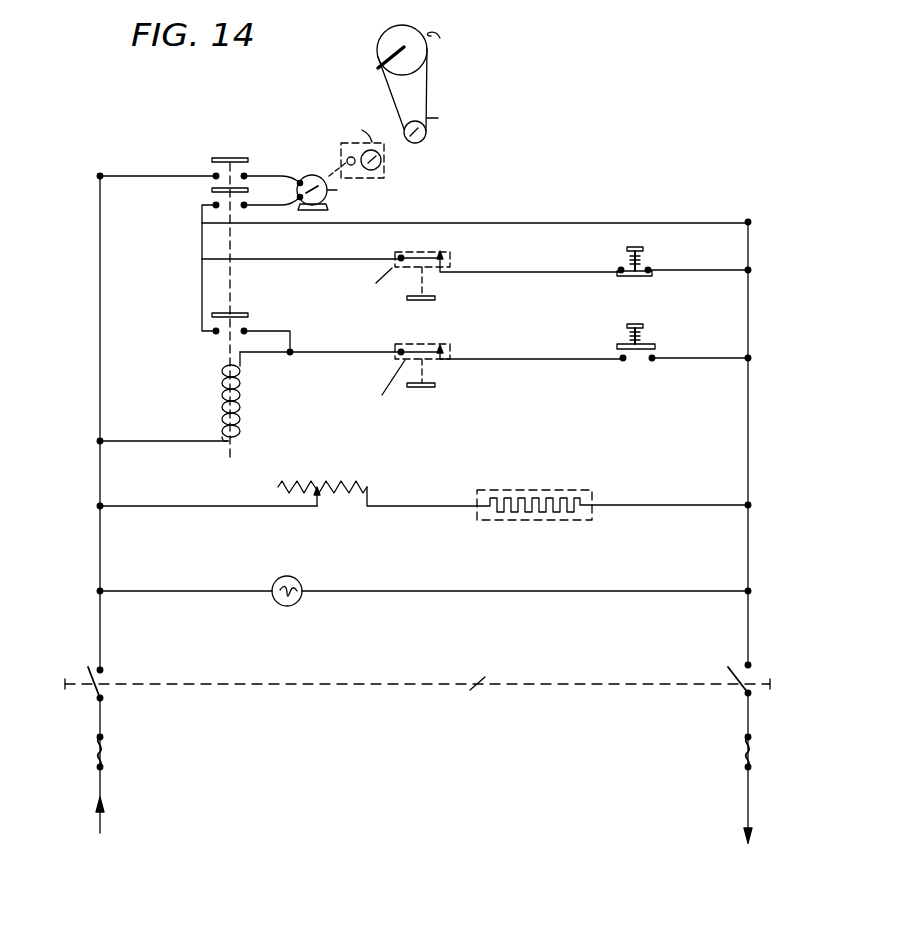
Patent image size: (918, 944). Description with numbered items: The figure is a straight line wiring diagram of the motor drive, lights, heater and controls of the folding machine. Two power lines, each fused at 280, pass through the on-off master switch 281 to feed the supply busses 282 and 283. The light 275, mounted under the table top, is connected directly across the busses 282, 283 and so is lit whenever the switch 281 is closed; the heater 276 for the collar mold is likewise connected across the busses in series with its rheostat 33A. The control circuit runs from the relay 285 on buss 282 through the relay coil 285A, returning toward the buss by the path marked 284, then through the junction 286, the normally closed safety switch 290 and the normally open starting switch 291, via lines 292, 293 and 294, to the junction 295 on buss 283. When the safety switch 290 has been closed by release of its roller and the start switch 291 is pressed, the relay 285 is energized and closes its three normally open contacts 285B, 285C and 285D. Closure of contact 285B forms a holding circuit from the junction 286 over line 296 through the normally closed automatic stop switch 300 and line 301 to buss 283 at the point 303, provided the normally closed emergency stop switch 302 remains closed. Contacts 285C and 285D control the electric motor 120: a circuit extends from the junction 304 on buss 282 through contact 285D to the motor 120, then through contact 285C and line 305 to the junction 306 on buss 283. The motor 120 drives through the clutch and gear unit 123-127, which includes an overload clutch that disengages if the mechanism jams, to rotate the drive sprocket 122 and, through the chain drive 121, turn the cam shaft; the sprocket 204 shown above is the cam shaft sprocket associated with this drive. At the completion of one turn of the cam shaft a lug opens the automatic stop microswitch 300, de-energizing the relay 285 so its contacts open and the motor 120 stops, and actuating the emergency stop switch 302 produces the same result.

The sprocket 204 is at (398, 36).
The chain drive 121 is at (427, 85).
The sprocket 122 is at (427, 137).
The clutch and gear unit 123-127 is at (384, 166).
The electric motor 120 is at (320, 173).
The relay contact 285D is at (209, 165).
The relay contact 285C is at (208, 205).
The relay contact 285B is at (250, 331).
The relay coil 285A is at (242, 397).
The relay 285 is at (208, 344).
The junction 304 is at (100, 174).
The line 305 is at (575, 222).
The junction 306 is at (750, 222).
The line 296 is at (321, 253).
The automatic stop switch 300 is at (450, 256).
The line 301 is at (557, 275).
The emergency stop switch 302 is at (650, 262).
The junction 303 is at (750, 270).
The buss 283 is at (750, 310).
The junction 286 is at (293, 362).
The line 292 is at (360, 360).
The safety switch 290 is at (447, 342).
The starting switch 291 is at (655, 340).
The line 293 is at (570, 362).
The line 294 is at (710, 362).
The junction 295 is at (750, 358).
The conductor 284 is at (100, 441).
The rheostat 33A is at (336, 486).
The heater 276 is at (545, 490).
The light 275 is at (298, 578).
The buss 282 is at (102, 623).
The master switch 281 is at (103, 680).
The fuse 280 is at (102, 750).